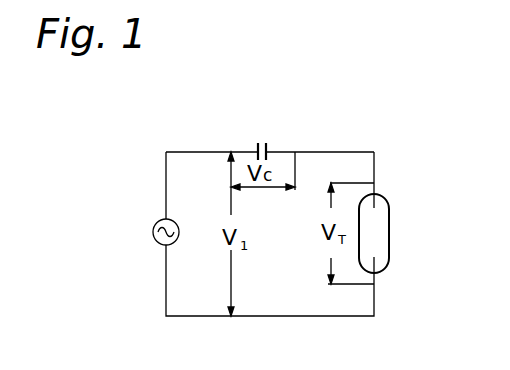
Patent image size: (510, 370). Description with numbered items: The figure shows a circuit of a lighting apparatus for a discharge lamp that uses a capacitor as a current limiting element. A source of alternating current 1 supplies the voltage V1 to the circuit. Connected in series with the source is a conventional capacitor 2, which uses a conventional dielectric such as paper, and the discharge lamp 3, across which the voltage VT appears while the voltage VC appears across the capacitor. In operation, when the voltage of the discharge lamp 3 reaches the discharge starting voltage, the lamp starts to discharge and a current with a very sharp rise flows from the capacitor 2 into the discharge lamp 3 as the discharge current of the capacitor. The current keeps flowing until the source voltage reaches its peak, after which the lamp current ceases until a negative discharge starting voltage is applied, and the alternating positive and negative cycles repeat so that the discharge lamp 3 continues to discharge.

The source of alternating current 1 is at (180, 230).
The capacitor 2 is at (262, 139).
The discharge lamp 3 is at (391, 227).